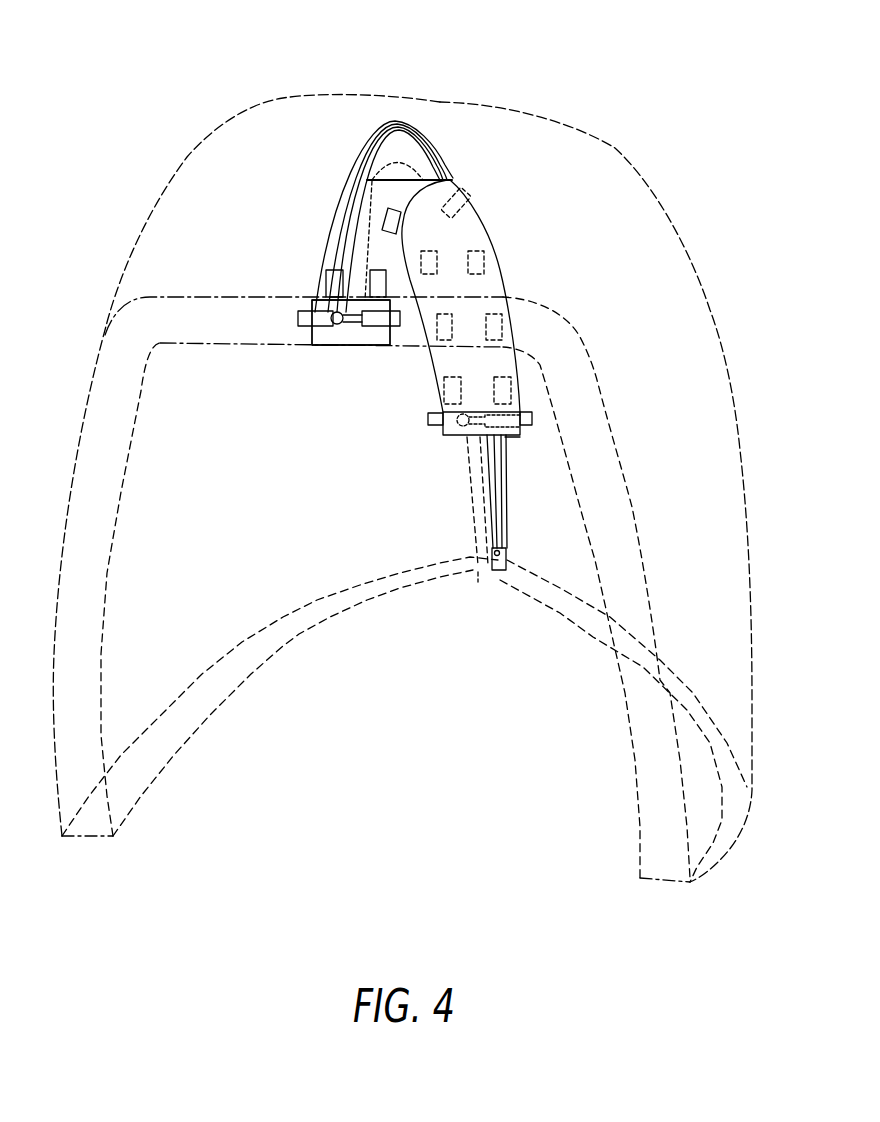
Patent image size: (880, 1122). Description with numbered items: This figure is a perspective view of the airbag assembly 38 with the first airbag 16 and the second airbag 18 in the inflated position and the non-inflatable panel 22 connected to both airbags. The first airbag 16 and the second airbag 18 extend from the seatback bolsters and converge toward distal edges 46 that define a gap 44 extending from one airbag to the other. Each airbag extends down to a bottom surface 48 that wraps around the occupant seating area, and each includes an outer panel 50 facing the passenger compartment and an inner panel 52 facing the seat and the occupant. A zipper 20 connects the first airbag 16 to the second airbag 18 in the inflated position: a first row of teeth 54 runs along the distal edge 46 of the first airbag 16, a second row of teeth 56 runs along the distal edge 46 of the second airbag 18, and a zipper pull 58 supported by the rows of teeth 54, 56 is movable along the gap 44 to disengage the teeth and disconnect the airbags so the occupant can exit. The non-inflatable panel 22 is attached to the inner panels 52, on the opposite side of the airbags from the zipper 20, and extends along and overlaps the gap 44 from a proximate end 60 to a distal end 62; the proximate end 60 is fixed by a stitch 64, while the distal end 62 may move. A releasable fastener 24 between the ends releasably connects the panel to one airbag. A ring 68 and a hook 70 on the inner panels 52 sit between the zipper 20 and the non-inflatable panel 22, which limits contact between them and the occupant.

The first airbag 16 is at (150, 206).
The second airbag 18 is at (677, 221).
The zipper 20 is at (402, 213).
The non-inflatable panel 22 is at (441, 433).
The releasable fastener 24 is at (323, 292).
The airbag assembly 38 is at (150, 75).
The gap 44 is at (481, 583).
The distal edges 46 is at (480, 503).
The bottom surface 48 is at (302, 614).
The outer panel 50 is at (207, 293).
The inner panel 52 is at (247, 345).
The first row of teeth 54 is at (363, 160).
The second row of teeth 56 is at (363, 185).
The zipper pull 58 is at (498, 577).
The proximate end 60 is at (336, 345).
The distal end 62 is at (505, 437).
The stitch 64 is at (351, 322).
The ring 68 is at (335, 326).
The hook 70 is at (348, 327).